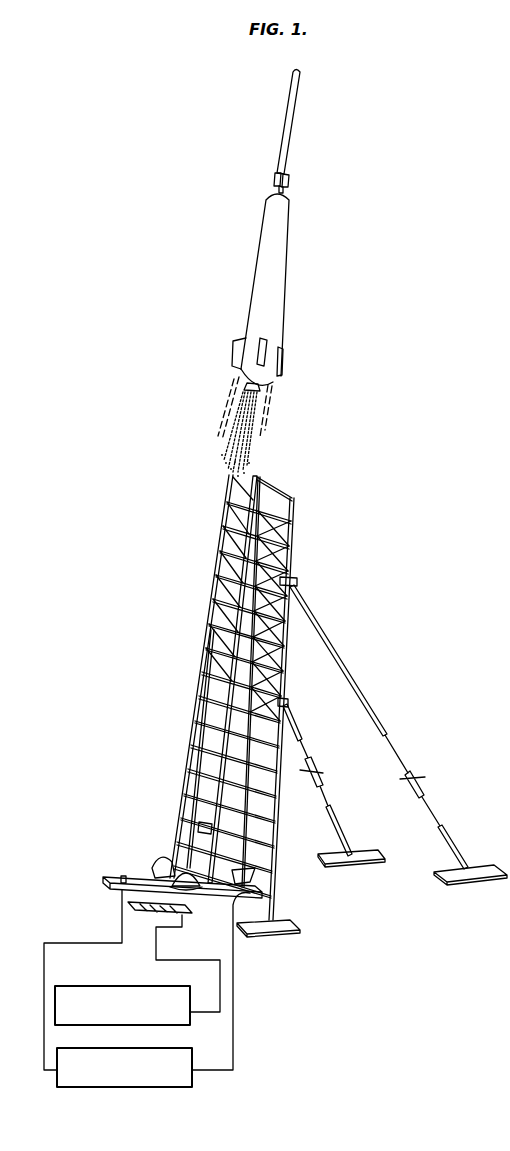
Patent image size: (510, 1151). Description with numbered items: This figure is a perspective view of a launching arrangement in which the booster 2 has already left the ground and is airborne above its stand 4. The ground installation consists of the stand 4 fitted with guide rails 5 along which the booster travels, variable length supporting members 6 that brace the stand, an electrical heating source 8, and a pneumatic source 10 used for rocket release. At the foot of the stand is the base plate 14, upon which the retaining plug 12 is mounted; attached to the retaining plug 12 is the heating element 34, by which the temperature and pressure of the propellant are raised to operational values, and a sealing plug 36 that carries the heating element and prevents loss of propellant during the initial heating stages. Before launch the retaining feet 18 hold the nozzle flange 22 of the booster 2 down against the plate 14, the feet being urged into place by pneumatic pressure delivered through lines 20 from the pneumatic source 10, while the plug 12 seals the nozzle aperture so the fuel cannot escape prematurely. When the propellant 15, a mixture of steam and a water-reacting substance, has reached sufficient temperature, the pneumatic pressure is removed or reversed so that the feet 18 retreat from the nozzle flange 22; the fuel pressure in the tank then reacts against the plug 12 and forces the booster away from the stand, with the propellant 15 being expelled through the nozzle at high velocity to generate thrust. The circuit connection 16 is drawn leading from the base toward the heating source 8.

The booster 2 is at (278, 317).
The nozzle flange 22 is at (276, 405).
The propellant 15 is at (253, 445).
The guide rails 5 is at (259, 474).
The stand 4 is at (196, 682).
The heating element 34 is at (192, 788).
The sealing plug 36 is at (208, 826).
The retaining plug 12 is at (157, 866).
The retaining feet 18 is at (168, 862).
The base plate 14 is at (122, 877).
The variable length supporting members 6 is at (352, 695).
The conductor 16 is at (156, 944).
The lines 20 is at (44, 1040).
The electrical heating source 8 is at (81, 986).
The pneumatic source 10 is at (121, 1088).